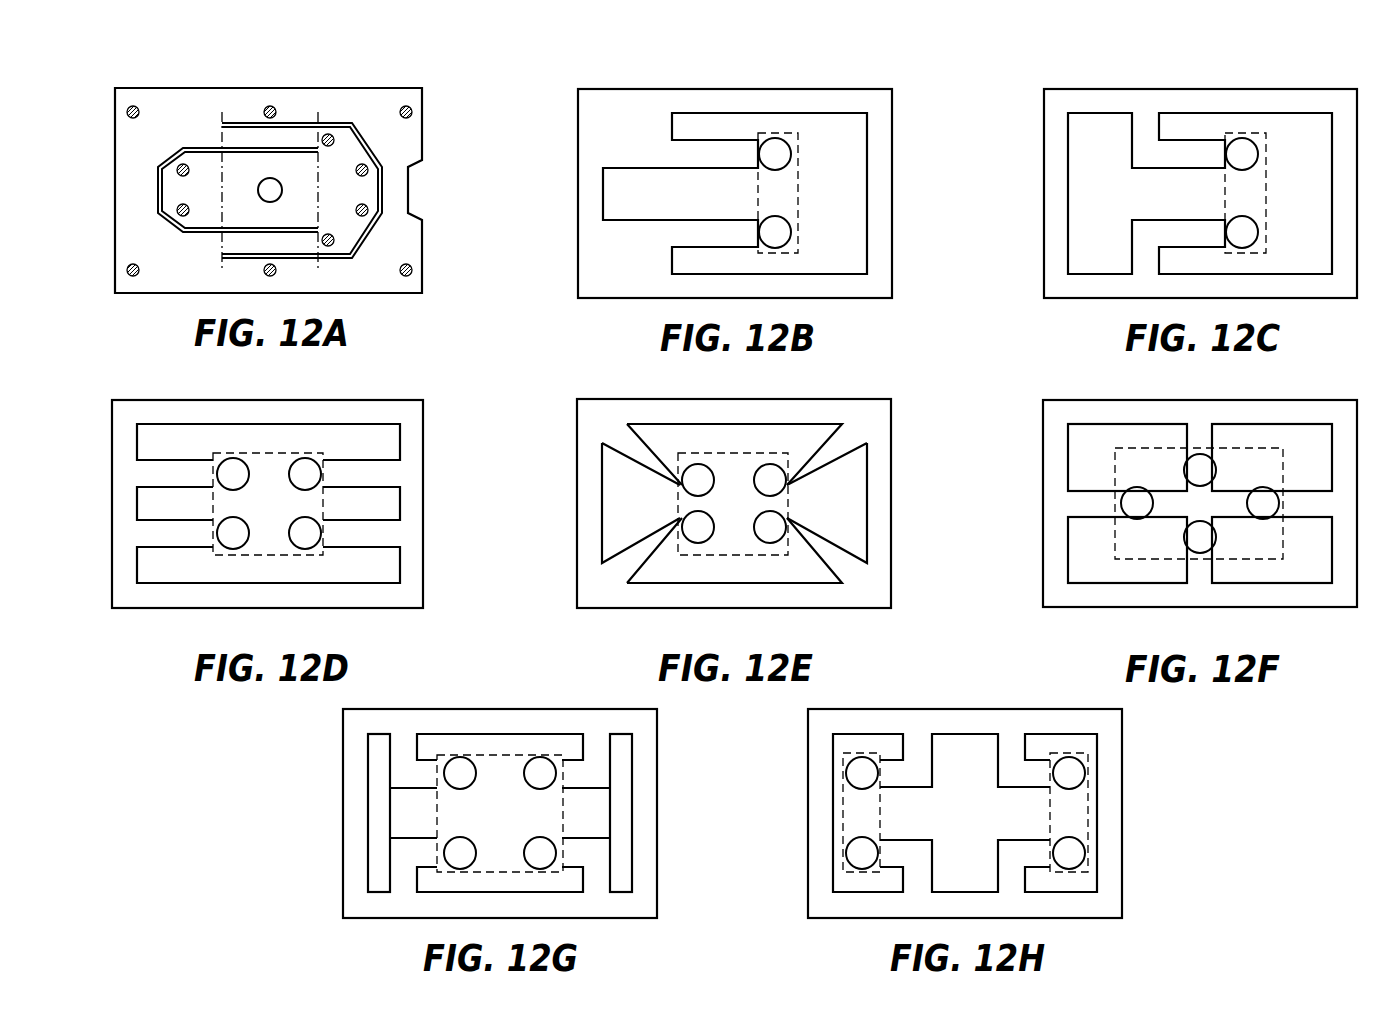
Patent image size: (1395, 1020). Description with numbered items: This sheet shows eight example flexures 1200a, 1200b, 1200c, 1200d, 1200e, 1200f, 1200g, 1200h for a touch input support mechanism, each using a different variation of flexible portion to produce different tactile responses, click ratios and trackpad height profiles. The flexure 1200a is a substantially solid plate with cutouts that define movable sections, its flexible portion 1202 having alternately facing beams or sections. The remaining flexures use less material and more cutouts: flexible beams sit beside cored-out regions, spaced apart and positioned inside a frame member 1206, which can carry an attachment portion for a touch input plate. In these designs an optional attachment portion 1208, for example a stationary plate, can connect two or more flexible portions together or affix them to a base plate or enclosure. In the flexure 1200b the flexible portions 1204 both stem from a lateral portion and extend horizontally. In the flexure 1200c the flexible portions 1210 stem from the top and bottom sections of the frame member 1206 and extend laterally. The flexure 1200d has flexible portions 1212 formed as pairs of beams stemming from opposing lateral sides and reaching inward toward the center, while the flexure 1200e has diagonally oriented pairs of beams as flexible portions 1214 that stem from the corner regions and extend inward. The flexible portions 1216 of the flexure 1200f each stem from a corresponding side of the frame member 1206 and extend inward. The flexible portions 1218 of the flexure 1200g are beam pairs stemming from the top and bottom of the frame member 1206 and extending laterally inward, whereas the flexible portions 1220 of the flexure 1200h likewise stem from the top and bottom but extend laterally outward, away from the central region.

In FIG. 12A, the flexure 1200a is at (105, 118).
In FIG. 12B, the flexure 1200b is at (548, 124).
In FIG. 12C, the flexure 1200c is at (1020, 133).
In FIG. 12D, the flexure 1200d is at (100, 411).
In FIG. 12E, the flexure 1200e is at (560, 415).
In FIG. 12F, the flexure 1200f is at (1018, 445).
In FIG. 12G, the flexure 1200g is at (323, 747).
In FIG. 12H, the flexure 1200h is at (1135, 748).
In FIG. 12A, the flexible portion 1202 is at (318, 103).
In FIG. 12B, the flexible portions 1204 is at (708, 232).
In FIG. 12B, the frame member 1206 is at (797, 97).
In FIG. 12C, the frame member 1206 is at (1262, 97).
In FIG. 12D, the frame member 1206 is at (122, 567).
In FIG. 12E, the frame member 1206 is at (583, 560).
In FIG. 12F, the frame member 1206 is at (1098, 597).
In FIG. 12G, the frame member 1206 is at (353, 850).
In FIG. 12H, the frame member 1206 is at (818, 758).
In FIG. 12B, the attachment portion 1208 is at (800, 190).
In FIG. 12C, the attachment portion 1208 is at (1265, 192).
In FIG. 12D, the attachment portion 1208 is at (270, 452).
In FIG. 12E, the attachment portion 1208 is at (733, 555).
In FIG. 12F, the attachment portion 1208 is at (1285, 532).
In FIG. 12G, the attachment portion 1208 is at (502, 757).
In FIG. 12H, the attachment portion 1208 is at (842, 812).
In FIG. 12C, the flexible portions 1210 is at (1183, 227).
In FIG. 12D, the flexible portions 1212 is at (180, 473).
In FIG. 12E, the flexible portions 1214 is at (655, 545).
In FIG. 12F, the flexible portions 1216 is at (1197, 440).
In FIG. 12G, the flexible portions 1218 is at (408, 848).
In FIG. 12H, the flexible portions 1220 is at (903, 850).